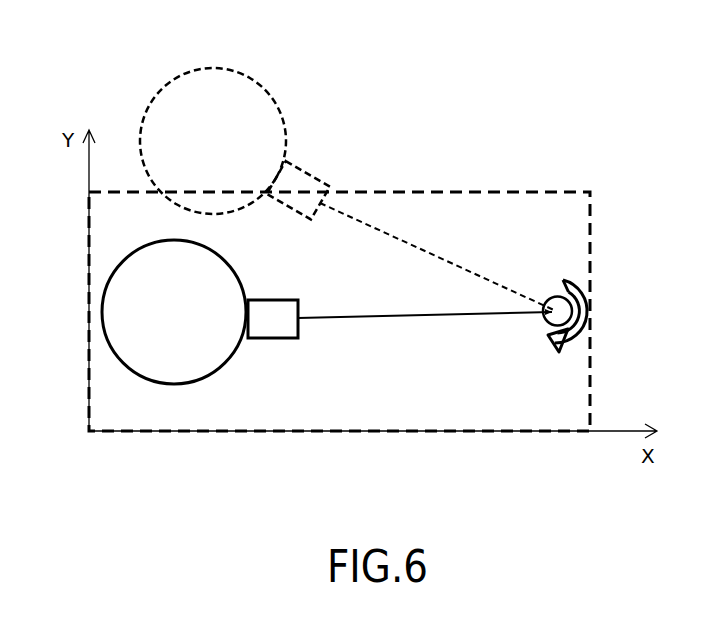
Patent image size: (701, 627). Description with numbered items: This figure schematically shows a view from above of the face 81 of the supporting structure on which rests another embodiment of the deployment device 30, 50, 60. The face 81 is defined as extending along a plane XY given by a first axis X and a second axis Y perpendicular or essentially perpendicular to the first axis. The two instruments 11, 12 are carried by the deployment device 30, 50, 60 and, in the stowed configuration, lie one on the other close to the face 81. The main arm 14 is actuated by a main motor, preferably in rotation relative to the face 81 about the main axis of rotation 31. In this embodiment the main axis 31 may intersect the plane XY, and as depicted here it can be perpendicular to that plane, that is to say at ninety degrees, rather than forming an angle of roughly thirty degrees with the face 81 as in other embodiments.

The instrument 11 is at (316, 366).
The instrument 12 is at (170, 383).
The main arm 14 is at (440, 258).
The deployment device 30 is at (355, 264).
The main axis of rotation 31 is at (551, 300).
The deployment device 50 is at (355, 264).
The deployment device 60 is at (538, 44).
The face 81 is at (330, 397).